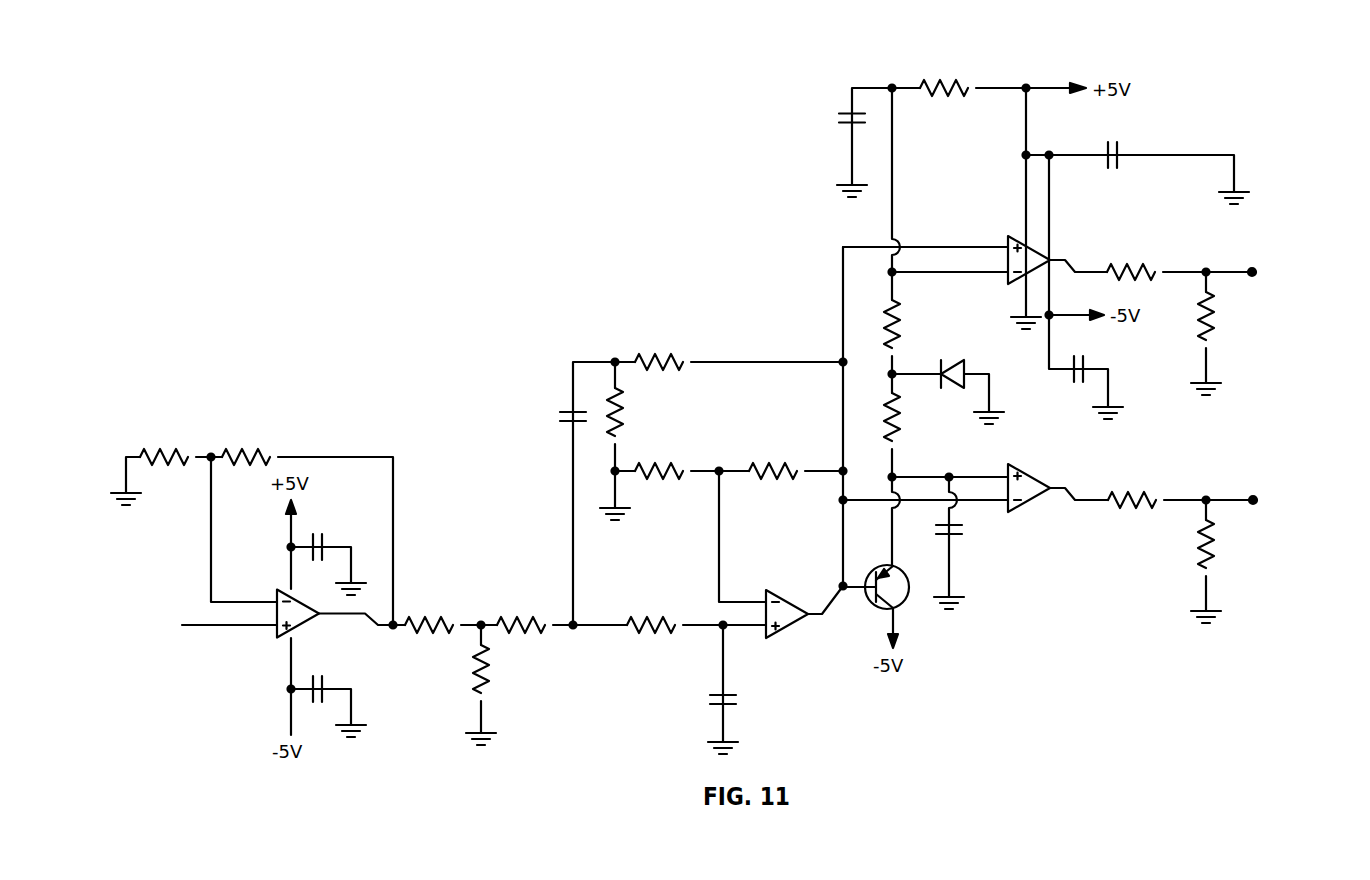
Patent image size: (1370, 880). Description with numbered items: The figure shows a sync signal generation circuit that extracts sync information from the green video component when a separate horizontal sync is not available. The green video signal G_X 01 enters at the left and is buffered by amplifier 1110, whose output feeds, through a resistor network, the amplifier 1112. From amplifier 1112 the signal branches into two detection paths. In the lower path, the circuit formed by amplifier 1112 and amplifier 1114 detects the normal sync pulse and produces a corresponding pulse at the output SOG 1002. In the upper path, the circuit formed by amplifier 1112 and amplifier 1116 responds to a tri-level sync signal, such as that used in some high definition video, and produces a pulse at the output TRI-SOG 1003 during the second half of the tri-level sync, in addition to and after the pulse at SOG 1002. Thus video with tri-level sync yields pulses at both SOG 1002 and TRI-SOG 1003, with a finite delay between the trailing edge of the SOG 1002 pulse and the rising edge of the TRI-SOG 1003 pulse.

The green video signal 01 is at (166, 603).
The amplifier 1110 is at (296, 630).
The amplifier 1112 is at (787, 633).
The amplifier 1114 is at (1028, 504).
The amplifier 1116 is at (1020, 238).
The SOG 1002 is at (1290, 492).
The TRI-SOG 1003 is at (1287, 256).